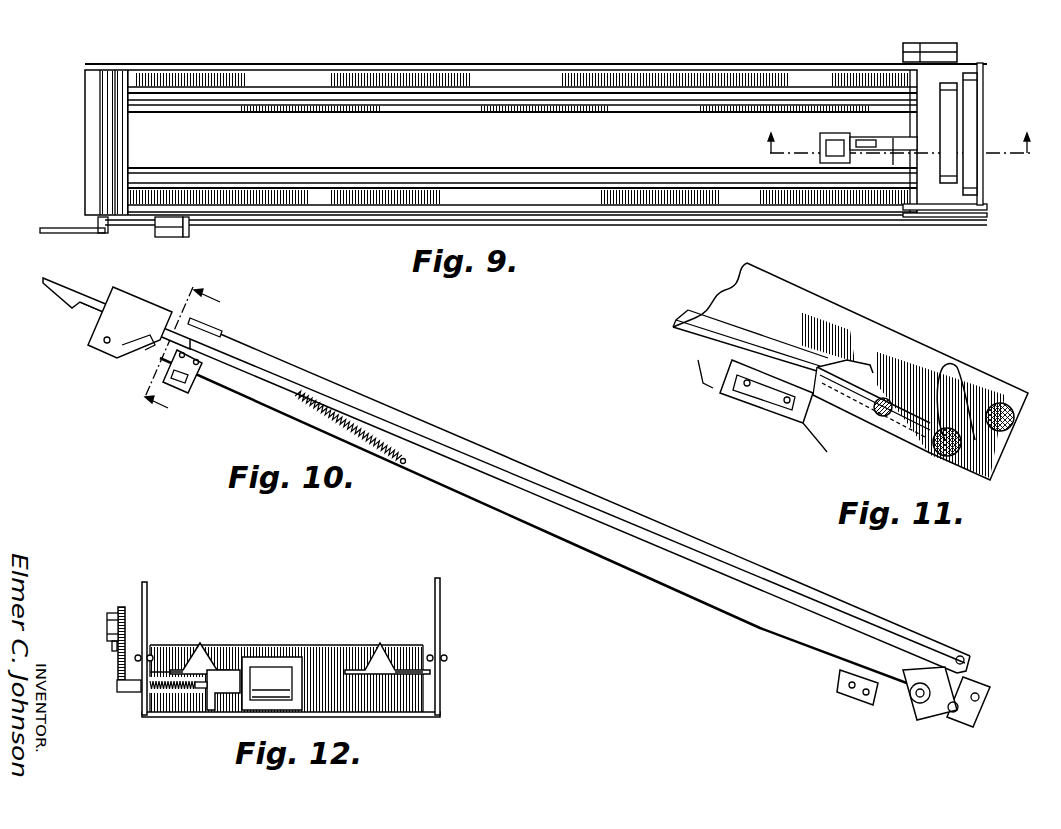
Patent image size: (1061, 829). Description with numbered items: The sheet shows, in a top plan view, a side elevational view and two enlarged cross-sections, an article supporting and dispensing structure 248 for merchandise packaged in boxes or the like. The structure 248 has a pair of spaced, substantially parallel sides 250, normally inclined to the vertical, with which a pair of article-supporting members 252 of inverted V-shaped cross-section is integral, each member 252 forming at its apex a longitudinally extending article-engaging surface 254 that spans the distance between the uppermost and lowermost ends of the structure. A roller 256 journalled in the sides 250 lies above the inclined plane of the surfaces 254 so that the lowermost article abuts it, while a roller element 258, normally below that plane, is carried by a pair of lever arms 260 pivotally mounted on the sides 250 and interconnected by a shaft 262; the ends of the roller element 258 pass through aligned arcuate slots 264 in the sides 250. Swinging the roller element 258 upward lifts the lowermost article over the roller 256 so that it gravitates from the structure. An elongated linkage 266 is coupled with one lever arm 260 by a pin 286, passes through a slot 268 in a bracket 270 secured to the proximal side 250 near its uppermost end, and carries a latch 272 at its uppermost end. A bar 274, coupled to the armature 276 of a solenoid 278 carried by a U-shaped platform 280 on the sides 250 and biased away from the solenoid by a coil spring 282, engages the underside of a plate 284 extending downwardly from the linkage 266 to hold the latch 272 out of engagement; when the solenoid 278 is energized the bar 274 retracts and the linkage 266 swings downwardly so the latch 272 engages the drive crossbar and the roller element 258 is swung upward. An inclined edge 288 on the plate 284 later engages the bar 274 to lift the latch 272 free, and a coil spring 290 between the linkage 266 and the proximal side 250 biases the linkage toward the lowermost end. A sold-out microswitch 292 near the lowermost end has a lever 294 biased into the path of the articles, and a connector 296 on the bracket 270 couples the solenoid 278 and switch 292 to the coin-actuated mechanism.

In FIG. 9, the article supporting and dispensing structure 248 is at (990, 58).
In FIG. 10, the article supporting and dispensing structure 248 is at (982, 675).
In FIG. 9, the sides 250 is at (826, 63).
In FIG. 10, the sides 250 is at (634, 571).
In FIG. 12, the sides 250 is at (142, 596).
In FIG. 9, the article-supporting members 252 is at (528, 101).
In FIG. 12, the article-supporting members 252 is at (215, 660).
In FIG. 12, the article-engaging surface 254 is at (199, 643).
In FIG. 9, the roller 256 is at (977, 128).
In FIG. 11, the roller 256 is at (1008, 423).
In FIG. 9, the roller element 258 is at (980, 170).
In FIG. 11, the roller element 258 is at (940, 450).
In FIG. 9, the lever arms 260 is at (945, 38).
In FIG. 10, the lever arms 260 is at (940, 705).
In FIG. 9, the shaft 262 is at (919, 138).
In FIG. 11, the shaft 262 is at (878, 420).
In FIG. 11, the arcuate slots 264 is at (963, 383).
In FIG. 9, the linkage 266 is at (708, 221).
In FIG. 10, the linkage 266 is at (536, 488).
In FIG. 12, the linkage 266 is at (112, 612).
In FIG. 9, the slot 268 is at (172, 234).
In FIG. 9, the bracket 270 is at (189, 230).
In FIG. 10, the bracket 270 is at (210, 332).
In FIG. 9, the latch 272 is at (55, 226).
In FIG. 10, the latch 272 is at (60, 290).
In FIG. 12, the bar 274 is at (125, 692).
In FIG. 12, the armature 276 is at (218, 705).
In FIG. 12, the solenoid 278 is at (282, 655).
In FIG. 12, the U-shaped platform 280 is at (360, 716).
In FIG. 12, the coil spring 282 is at (170, 700).
In FIG. 10, the plate 284 is at (108, 327).
In FIG. 12, the plate 284 is at (117, 666).
In FIG. 10, the pin 286 is at (962, 657).
In FIG. 10, the inclined edge 288 is at (148, 350).
In FIG. 10, the coil spring 290 is at (363, 420).
In FIG. 9, the sold-out microswitch 292 is at (828, 141).
In FIG. 11, the sold-out microswitch 292 is at (767, 413).
In FIG. 9, the lever 294 is at (893, 140).
In FIG. 11, the lever 294 is at (858, 366).
In FIG. 10, the connector 296 is at (190, 389).